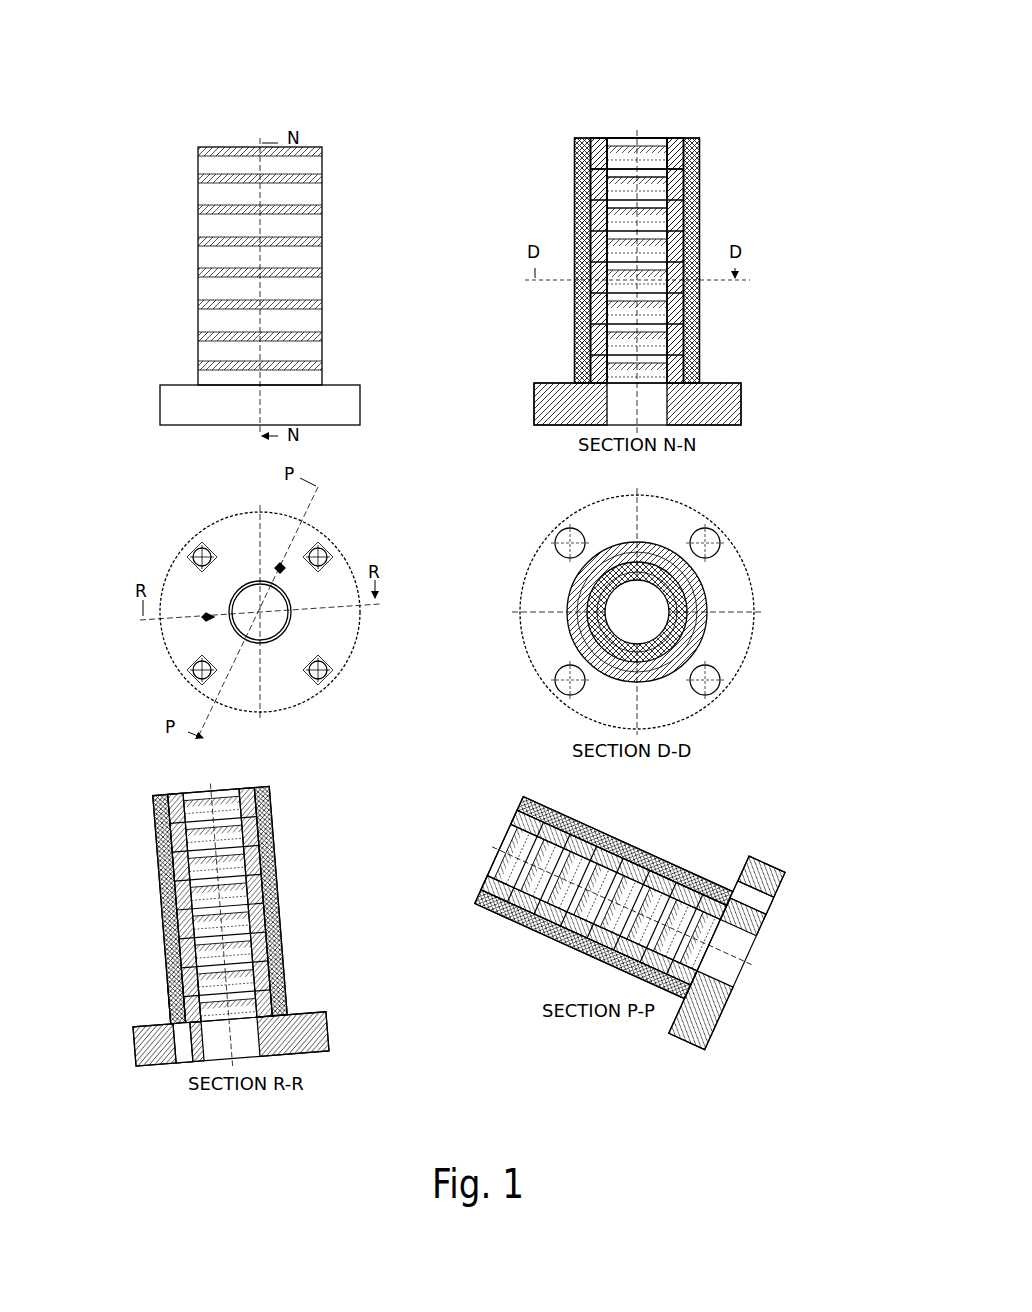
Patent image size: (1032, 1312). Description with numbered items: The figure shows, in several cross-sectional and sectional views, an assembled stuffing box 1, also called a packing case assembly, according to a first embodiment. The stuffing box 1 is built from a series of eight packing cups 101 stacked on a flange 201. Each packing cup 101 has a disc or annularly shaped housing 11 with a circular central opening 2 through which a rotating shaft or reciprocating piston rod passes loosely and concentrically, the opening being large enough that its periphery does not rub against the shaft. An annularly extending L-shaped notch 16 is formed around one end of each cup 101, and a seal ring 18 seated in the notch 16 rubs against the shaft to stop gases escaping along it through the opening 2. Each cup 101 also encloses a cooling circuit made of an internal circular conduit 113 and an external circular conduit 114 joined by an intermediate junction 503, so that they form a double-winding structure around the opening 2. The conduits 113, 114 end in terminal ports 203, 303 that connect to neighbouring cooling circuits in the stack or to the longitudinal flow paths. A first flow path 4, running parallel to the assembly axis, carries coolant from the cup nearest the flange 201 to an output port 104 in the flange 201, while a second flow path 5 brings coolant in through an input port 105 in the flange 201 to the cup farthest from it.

The stuffing box 1 is at (358, 118).
The circular central opening 2 is at (622, 138).
The first flow path 4 is at (177, 993).
The second flow path 5 is at (531, 800).
The housing 11 is at (650, 160).
The notch 16 is at (650, 195).
The seal ring 18 is at (650, 207).
The packing cup 101 is at (212, 193).
The output port 104 is at (208, 618).
The input port 105 is at (282, 566).
The internal circular conduit 113 is at (703, 546).
The external circular conduit 114 is at (713, 581).
The flange 201 is at (340, 400).
The terminal port 203 is at (580, 590).
The terminal port 303 is at (551, 608).
The intermediate junction 503 is at (565, 594).